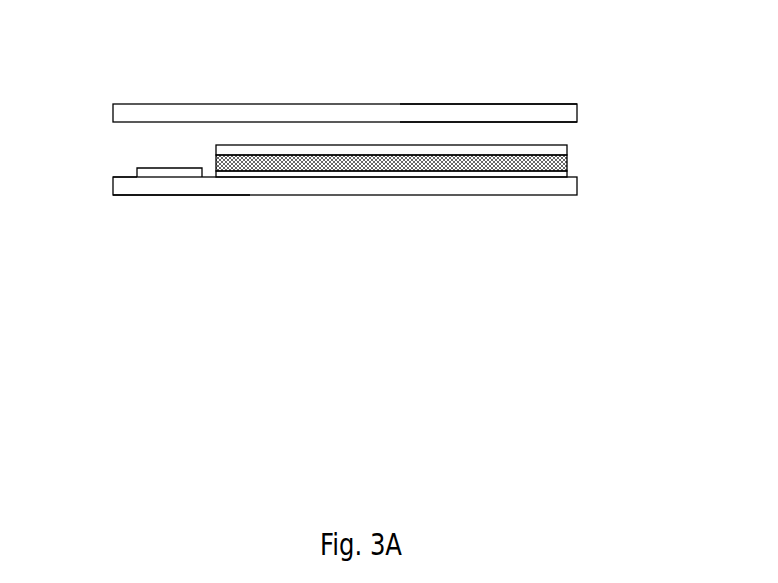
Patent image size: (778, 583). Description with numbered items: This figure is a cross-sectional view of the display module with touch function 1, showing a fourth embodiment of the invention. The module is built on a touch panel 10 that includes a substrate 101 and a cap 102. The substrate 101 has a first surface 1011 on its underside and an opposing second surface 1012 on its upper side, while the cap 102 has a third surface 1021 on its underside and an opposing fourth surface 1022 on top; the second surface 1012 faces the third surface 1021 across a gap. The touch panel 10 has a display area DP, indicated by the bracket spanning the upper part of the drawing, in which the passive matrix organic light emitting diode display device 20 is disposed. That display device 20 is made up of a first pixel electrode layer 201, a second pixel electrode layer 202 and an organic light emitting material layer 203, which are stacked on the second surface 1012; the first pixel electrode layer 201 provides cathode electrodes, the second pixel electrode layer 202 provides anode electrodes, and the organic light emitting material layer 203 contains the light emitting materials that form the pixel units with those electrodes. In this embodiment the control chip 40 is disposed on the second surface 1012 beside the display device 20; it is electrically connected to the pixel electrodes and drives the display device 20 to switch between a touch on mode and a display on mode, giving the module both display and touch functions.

The display module with touch function 1 is at (79, 38).
The touch panel 10 is at (151, 347).
The substrate 101 is at (137, 183).
The first surface 1011 is at (157, 195).
The second surface 1012 is at (125, 175).
The cap 102 is at (557, 110).
The third surface 1021 is at (565, 122).
The fourth surface 1022 is at (508, 103).
The passive matrix organic light emitting diode display device 20 is at (571, 355).
The first pixel electrode layer 201 is at (233, 173).
The second pixel electrode layer 202 is at (278, 149).
The organic light emitting material layer 203 is at (327, 162).
The control chip 40 is at (182, 173).
The display area DP is at (205, 65).